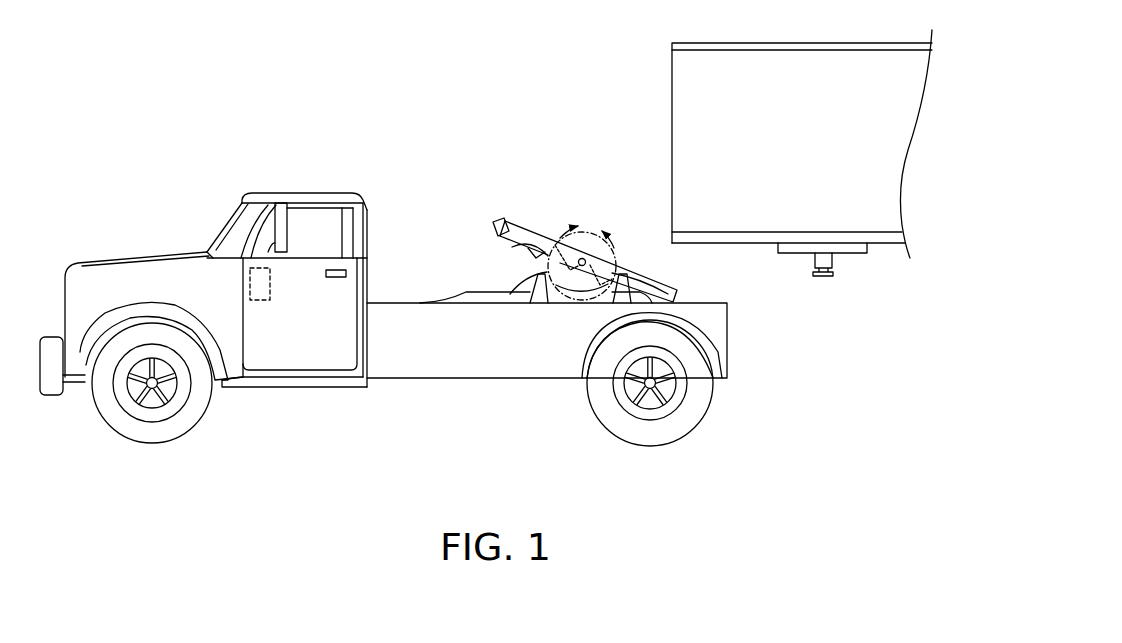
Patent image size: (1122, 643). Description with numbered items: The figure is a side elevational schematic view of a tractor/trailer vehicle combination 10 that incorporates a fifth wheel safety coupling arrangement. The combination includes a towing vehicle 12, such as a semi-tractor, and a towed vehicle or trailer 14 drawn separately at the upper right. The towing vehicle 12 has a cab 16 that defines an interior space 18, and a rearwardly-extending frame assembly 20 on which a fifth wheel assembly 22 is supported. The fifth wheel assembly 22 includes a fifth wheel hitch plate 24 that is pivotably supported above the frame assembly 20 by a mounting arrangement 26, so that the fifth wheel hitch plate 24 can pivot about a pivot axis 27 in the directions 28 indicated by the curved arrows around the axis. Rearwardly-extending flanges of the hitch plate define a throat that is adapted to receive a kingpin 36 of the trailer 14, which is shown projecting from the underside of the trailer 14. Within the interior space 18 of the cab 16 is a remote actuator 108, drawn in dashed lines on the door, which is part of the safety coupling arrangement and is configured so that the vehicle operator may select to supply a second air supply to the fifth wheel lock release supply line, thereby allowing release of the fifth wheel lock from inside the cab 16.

The tractor/trailer vehicle combination 10 is at (398, 62).
The towing vehicle 12 is at (283, 192).
The trailer 14 is at (670, 117).
The cab 16 is at (366, 230).
The interior space 18 is at (312, 225).
The frame assembly 20 is at (485, 379).
The fifth wheel assembly 22 is at (493, 265).
The fifth wheel hitch plate 24 is at (508, 221).
The mounting arrangement 26 is at (523, 285).
The pivot axis 27 is at (583, 259).
The directions 28 is at (578, 282).
The kingpin 36 is at (828, 258).
The remote actuator 108 is at (246, 283).